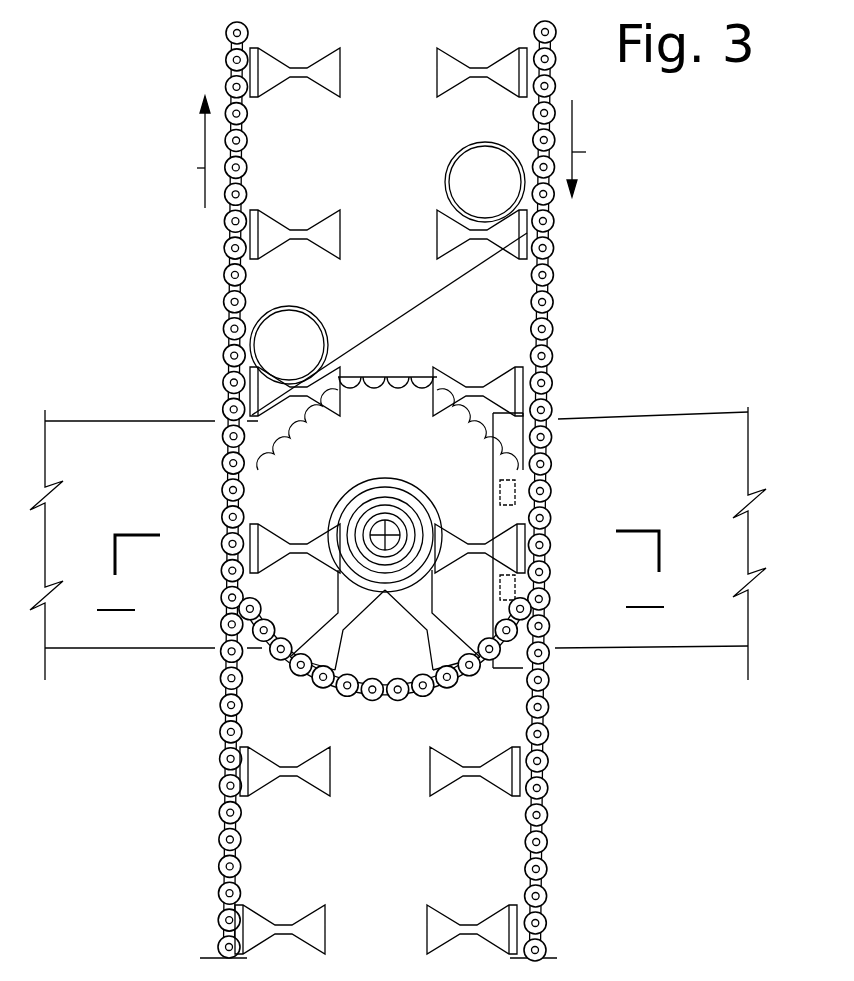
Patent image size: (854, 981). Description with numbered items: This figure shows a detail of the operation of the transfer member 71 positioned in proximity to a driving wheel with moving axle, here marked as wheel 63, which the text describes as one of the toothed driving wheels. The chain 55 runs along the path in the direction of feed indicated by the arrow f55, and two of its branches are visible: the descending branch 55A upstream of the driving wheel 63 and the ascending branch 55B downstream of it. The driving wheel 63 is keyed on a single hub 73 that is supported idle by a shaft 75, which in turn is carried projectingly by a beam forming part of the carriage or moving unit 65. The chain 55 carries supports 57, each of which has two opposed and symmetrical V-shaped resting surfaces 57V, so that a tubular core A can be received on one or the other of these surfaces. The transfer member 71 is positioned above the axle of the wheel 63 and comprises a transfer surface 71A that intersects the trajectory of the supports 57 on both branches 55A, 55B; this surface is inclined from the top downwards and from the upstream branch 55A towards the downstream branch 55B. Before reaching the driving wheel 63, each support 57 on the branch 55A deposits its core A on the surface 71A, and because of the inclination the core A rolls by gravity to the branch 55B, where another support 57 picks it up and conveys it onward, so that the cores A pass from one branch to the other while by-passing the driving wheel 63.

The chain 55 is at (395, 491).
The branch upstream of the driving wheel 55A is at (550, 270).
The branch downstream of the driving wheel 55B is at (226, 298).
The support 57 is at (381, 501).
The V-shaped resting surface 57V is at (479, 763).
The guide 63 is at (277, 485).
The carriage or moving unit 65 is at (648, 416).
The transfer member 71 is at (428, 450).
The transfer surface 71A is at (375, 330).
The hub 73 is at (402, 498).
The shaft 75 is at (368, 558).
The core A is at (294, 315).
The direction of feed of the chain f55 is at (394, 152).